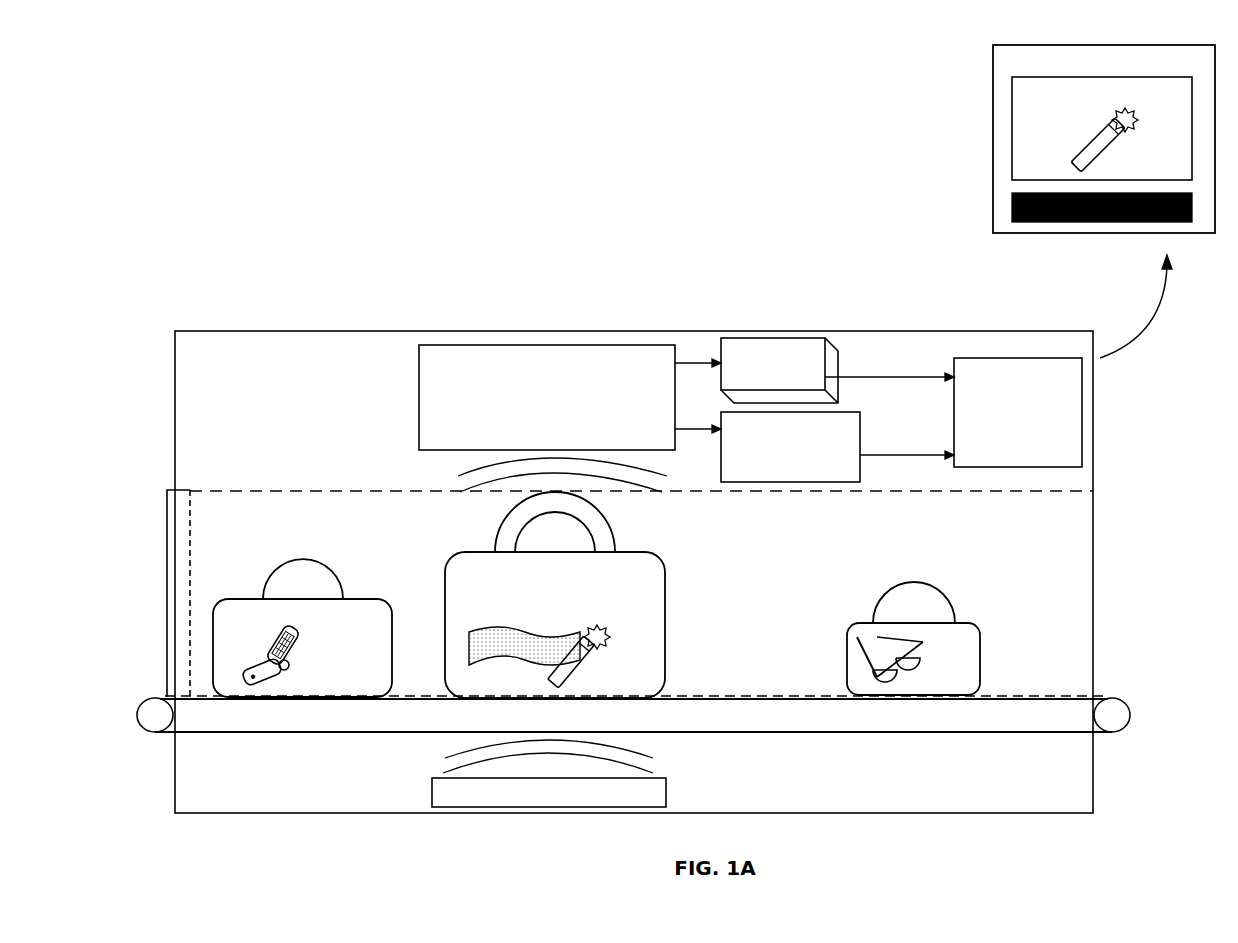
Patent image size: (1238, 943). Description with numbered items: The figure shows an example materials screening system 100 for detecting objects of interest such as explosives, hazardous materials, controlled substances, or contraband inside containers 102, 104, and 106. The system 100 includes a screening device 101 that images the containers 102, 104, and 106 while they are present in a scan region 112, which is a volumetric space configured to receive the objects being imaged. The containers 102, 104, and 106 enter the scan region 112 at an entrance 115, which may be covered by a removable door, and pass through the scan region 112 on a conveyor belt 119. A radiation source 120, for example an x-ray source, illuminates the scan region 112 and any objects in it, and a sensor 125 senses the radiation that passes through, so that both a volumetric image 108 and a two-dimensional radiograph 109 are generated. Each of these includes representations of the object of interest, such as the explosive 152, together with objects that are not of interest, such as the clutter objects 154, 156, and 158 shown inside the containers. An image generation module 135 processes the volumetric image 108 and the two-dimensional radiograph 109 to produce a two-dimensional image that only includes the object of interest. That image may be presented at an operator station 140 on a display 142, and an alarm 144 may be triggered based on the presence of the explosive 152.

The system 100 is at (578, 134).
The screening device 101 is at (265, 340).
The container 102 is at (317, 615).
The container 104 is at (592, 595).
The container 106 is at (942, 638).
The volumetric image 108 is at (840, 350).
The two-dimensional radiograph 109 is at (862, 422).
The scan region 112 is at (272, 490).
The entrance 115 is at (175, 491).
The conveyor belt 119 is at (157, 733).
The radiation source 120 is at (667, 800).
The sensor 125 is at (547, 418).
The image generation module 135 is at (1018, 412).
The operator station 140 is at (1072, 139).
The display 142 is at (1102, 128).
The alarm 144 is at (1102, 207).
The explosive 152 is at (590, 672).
The cloth 154 is at (550, 628).
The glasses 156 is at (918, 648).
The cell phone 158 is at (300, 660).